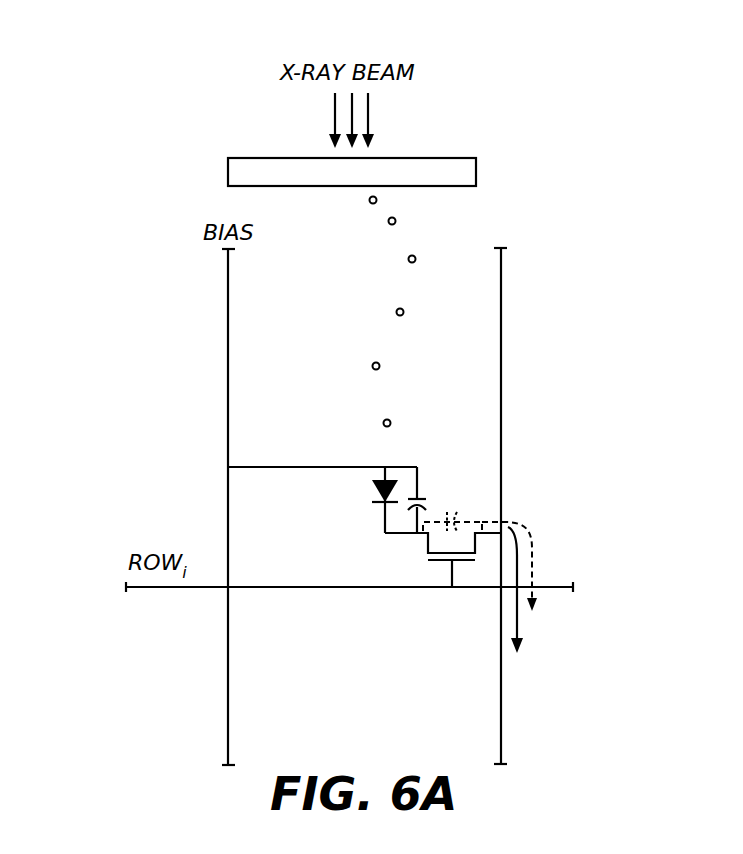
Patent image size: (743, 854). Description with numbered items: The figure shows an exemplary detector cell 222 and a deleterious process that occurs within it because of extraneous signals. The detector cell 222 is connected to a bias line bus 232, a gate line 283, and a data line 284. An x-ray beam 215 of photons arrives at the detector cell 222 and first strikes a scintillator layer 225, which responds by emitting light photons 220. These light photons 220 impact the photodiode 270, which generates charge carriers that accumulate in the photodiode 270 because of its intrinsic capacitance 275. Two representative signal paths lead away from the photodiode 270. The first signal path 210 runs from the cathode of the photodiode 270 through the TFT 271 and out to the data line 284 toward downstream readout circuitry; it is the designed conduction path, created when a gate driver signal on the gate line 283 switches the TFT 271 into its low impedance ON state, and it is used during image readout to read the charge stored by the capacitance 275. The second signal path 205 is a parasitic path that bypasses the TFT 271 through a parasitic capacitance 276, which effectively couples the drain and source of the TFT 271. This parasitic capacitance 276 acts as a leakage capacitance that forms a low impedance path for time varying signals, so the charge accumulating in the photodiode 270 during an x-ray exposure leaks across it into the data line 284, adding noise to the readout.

The x-ray beam 215 is at (372, 120).
The scintillator layer 225 is at (228, 172).
The light photons 220 is at (396, 221).
The bias line bus 232 is at (228, 412).
The data line 284 is at (503, 668).
The detector cell 222 is at (558, 386).
The photodiode 270 is at (375, 492).
The capacitance 275 is at (427, 503).
The parasitic capacitance 276 is at (452, 517).
The TFT 271 is at (475, 545).
The gate line 283 is at (295, 590).
The second signal path 205 is at (535, 565).
The first signal path 210 is at (520, 622).